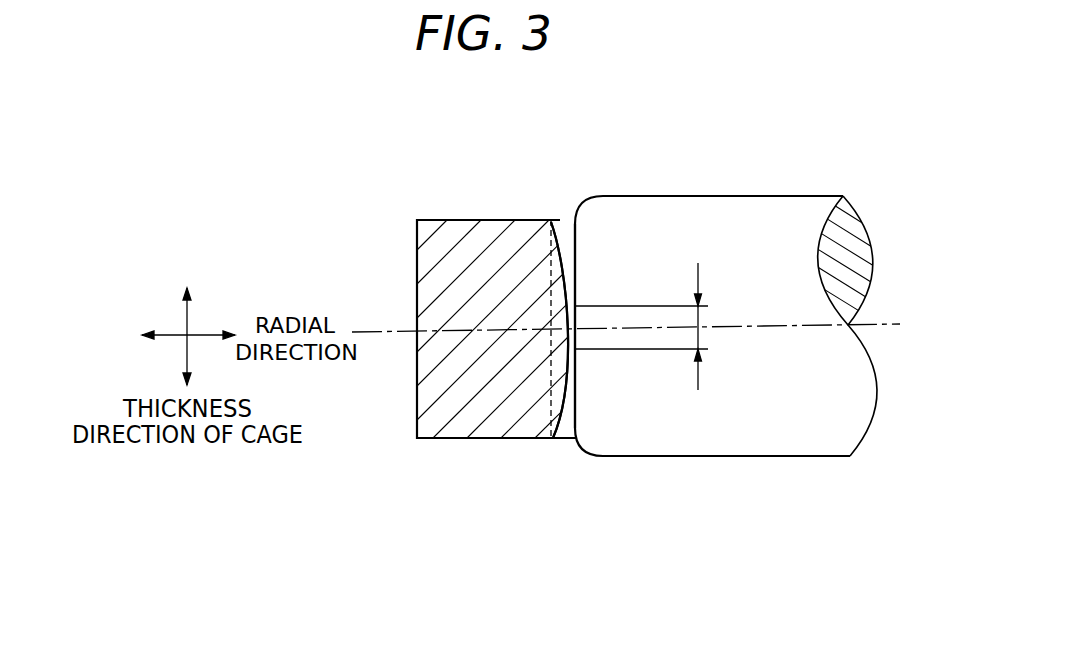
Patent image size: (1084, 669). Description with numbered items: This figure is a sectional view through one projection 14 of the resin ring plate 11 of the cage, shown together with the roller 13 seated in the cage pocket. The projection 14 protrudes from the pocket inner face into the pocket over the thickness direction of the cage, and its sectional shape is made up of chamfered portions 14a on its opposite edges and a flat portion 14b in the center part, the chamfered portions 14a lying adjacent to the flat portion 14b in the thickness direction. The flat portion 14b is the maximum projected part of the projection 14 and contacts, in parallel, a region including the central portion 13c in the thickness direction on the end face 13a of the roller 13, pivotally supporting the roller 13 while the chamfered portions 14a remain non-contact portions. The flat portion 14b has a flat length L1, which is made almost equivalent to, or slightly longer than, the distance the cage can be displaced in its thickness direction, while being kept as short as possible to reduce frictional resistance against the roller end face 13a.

The ring plate 11 is at (440, 428).
The roller 13 is at (749, 437).
The end face of the roller 13a is at (573, 405).
The central portion 13c is at (575, 335).
The projection 14 is at (552, 310).
The chamfered portions 14a is at (566, 290).
The flat portion 14b is at (575, 325).
The flat length L1 is at (700, 320).